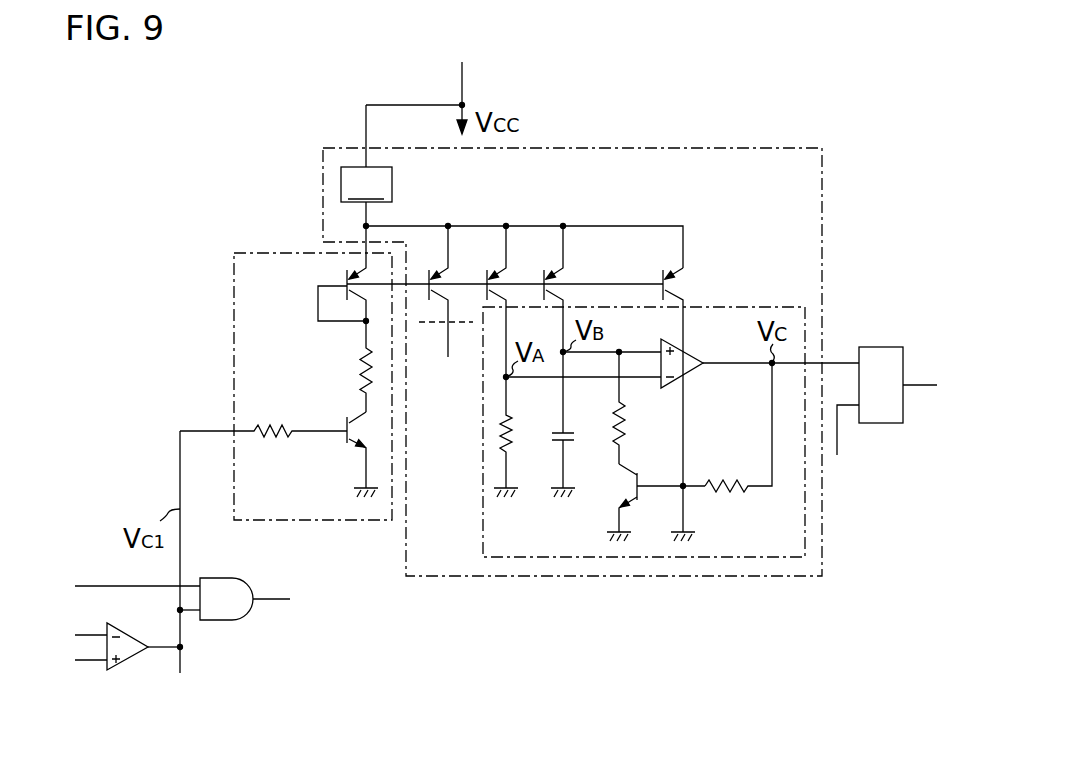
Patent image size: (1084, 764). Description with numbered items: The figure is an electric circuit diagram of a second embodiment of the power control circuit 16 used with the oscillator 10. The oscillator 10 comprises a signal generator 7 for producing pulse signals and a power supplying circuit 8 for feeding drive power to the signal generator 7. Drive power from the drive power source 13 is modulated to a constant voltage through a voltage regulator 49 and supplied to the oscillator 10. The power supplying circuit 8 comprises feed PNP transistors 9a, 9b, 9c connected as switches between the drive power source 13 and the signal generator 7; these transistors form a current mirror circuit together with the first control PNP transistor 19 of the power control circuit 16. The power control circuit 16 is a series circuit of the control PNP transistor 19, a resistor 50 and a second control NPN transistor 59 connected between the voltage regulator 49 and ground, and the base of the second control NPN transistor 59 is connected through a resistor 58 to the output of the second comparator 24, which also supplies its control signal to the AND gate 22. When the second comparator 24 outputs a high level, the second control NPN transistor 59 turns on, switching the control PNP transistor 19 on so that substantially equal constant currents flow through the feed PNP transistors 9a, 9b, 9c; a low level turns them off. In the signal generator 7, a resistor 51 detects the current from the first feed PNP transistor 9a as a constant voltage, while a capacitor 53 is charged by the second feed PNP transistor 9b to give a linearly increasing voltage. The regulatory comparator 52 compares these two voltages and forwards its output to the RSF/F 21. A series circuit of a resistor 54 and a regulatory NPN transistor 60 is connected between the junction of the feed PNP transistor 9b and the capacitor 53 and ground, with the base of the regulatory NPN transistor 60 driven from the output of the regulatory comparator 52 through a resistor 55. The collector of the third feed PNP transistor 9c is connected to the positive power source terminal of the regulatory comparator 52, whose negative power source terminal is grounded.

The drive power source 13 is at (462, 86).
The oscillator 10 is at (650, 146).
The voltage regulator 49 is at (366, 165).
The power supplying circuit 8 is at (745, 224).
The power control circuit 16 is at (255, 253).
The signal generator 7 is at (754, 307).
The first control PNP transistor 19 is at (346, 280).
The first feed PNP transistor 9a is at (489, 276).
The second feed PNP transistor 9b is at (547, 276).
The third feed PNP transistor 9c is at (664, 276).
The resistor 50 is at (362, 375).
The second control NPN transistor 59 is at (346, 439).
The resistor 58 is at (276, 436).
The AND gate 22 is at (243, 582).
The second comparator 24 is at (130, 655).
The resistor 51 is at (509, 443).
The capacitor 53 is at (555, 434).
The resistor 54 is at (615, 431).
The regulatory NPN transistor 60 is at (637, 476).
The resistor 55 is at (735, 489).
The regulatory comparator 52 is at (692, 358).
The RSF/F 21 is at (876, 347).